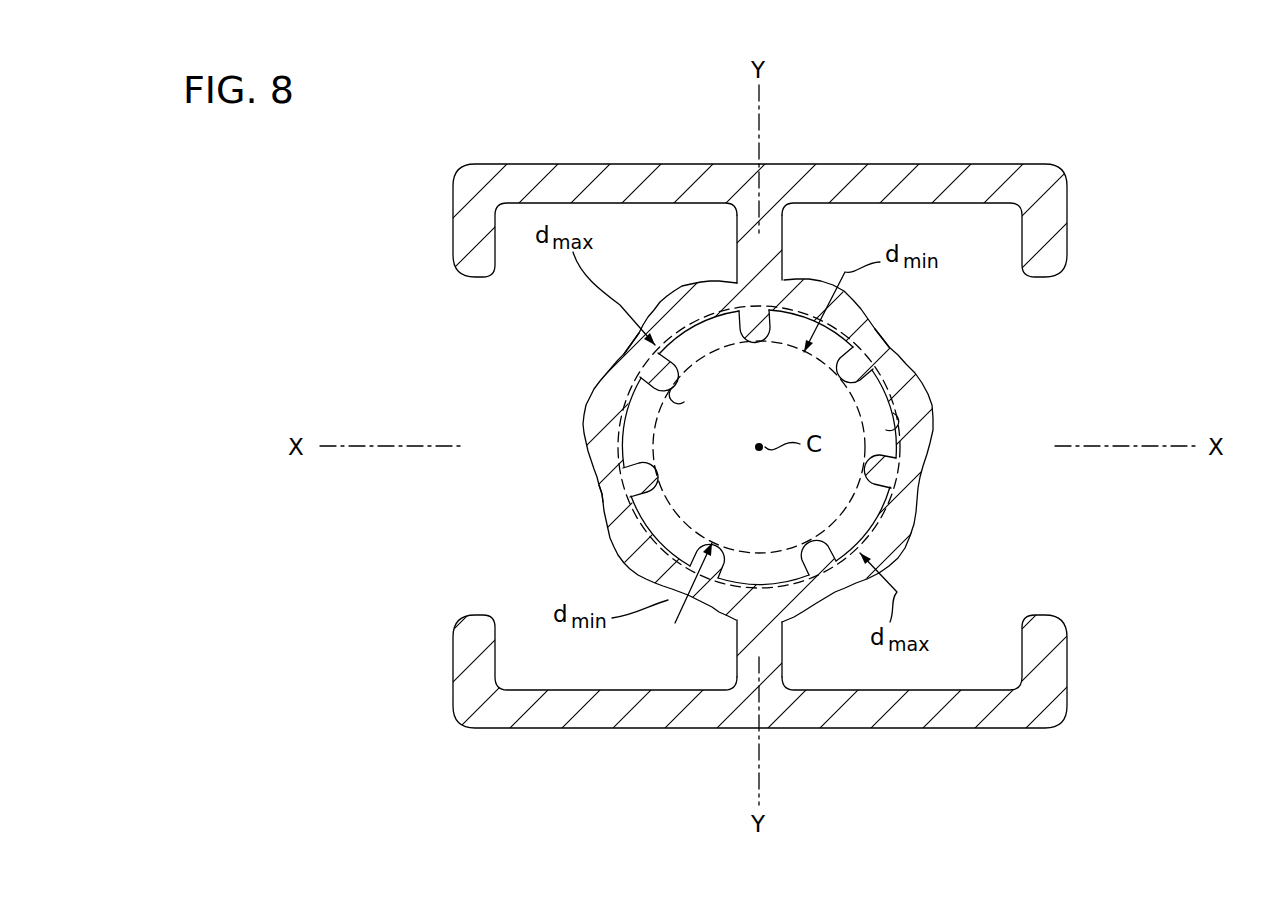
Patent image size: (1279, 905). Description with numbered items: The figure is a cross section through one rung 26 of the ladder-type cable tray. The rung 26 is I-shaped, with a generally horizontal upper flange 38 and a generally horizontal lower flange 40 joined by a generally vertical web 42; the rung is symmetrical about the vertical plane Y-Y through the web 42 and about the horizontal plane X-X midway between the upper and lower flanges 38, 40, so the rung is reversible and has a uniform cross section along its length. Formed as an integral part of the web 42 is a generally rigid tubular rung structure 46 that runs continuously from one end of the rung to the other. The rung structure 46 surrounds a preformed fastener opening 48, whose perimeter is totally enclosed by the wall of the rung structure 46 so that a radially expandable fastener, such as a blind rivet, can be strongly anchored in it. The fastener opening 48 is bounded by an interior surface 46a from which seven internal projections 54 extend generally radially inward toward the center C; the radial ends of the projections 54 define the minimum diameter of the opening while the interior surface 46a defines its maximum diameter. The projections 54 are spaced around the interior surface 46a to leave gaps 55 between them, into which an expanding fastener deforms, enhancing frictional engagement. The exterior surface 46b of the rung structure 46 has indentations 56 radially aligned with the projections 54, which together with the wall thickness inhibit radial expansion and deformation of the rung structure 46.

The rung 26 is at (1118, 124).
The upper flange 38 is at (626, 178).
The lower flange 40 is at (596, 718).
The web 42 is at (770, 246).
The tubular rung structure 46 is at (908, 541).
The interior surface 46a is at (900, 412).
The exterior surface 46b is at (618, 557).
The fastener opening 48 is at (712, 497).
The internal projection 54 is at (727, 350).
The gap 55 is at (642, 417).
The indentation 56 is at (630, 333).